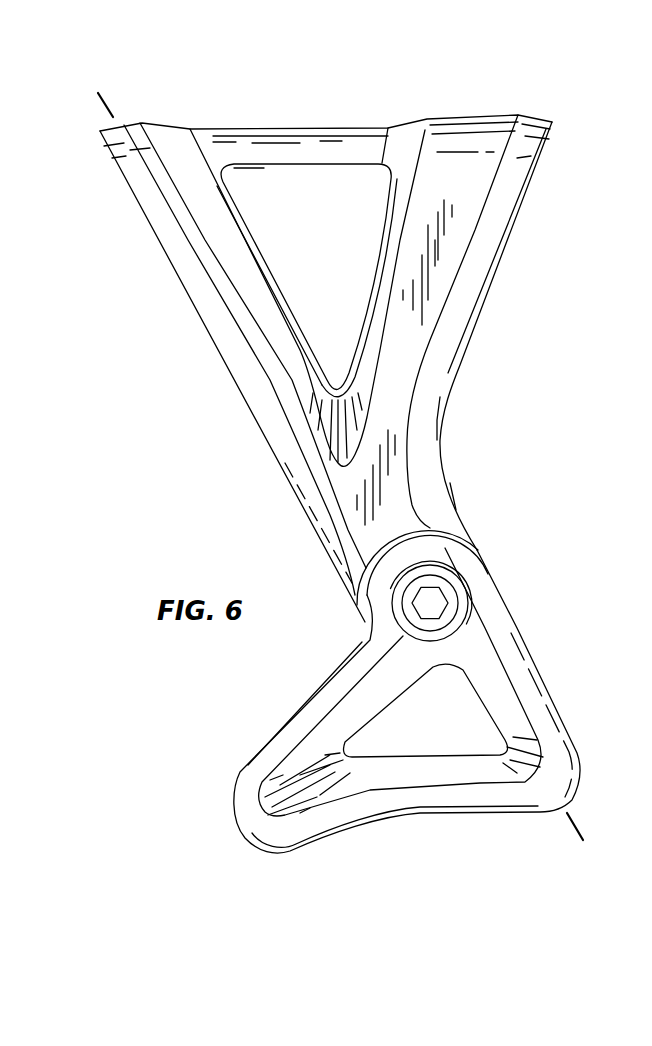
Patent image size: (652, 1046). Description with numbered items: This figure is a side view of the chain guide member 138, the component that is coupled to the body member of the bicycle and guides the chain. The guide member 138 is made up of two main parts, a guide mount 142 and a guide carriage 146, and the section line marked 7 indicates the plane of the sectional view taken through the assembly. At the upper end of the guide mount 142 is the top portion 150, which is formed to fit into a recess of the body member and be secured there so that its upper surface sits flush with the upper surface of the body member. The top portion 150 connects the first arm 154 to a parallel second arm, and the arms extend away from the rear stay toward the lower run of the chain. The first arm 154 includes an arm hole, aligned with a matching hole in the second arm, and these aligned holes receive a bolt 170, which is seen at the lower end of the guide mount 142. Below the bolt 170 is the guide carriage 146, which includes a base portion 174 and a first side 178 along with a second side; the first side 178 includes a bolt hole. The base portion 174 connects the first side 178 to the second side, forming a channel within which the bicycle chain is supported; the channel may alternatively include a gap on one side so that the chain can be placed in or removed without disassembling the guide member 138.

The section line 7- 7 is at (108, 104).
The guide member 138 is at (90, 249).
The guide mount 142 is at (203, 464).
The guide carriage 146 is at (228, 730).
The top portion 150 is at (311, 131).
The first arm 154 is at (298, 372).
The bolt 170 is at (467, 597).
The base portion 174 is at (465, 815).
The first side 178 is at (344, 724).